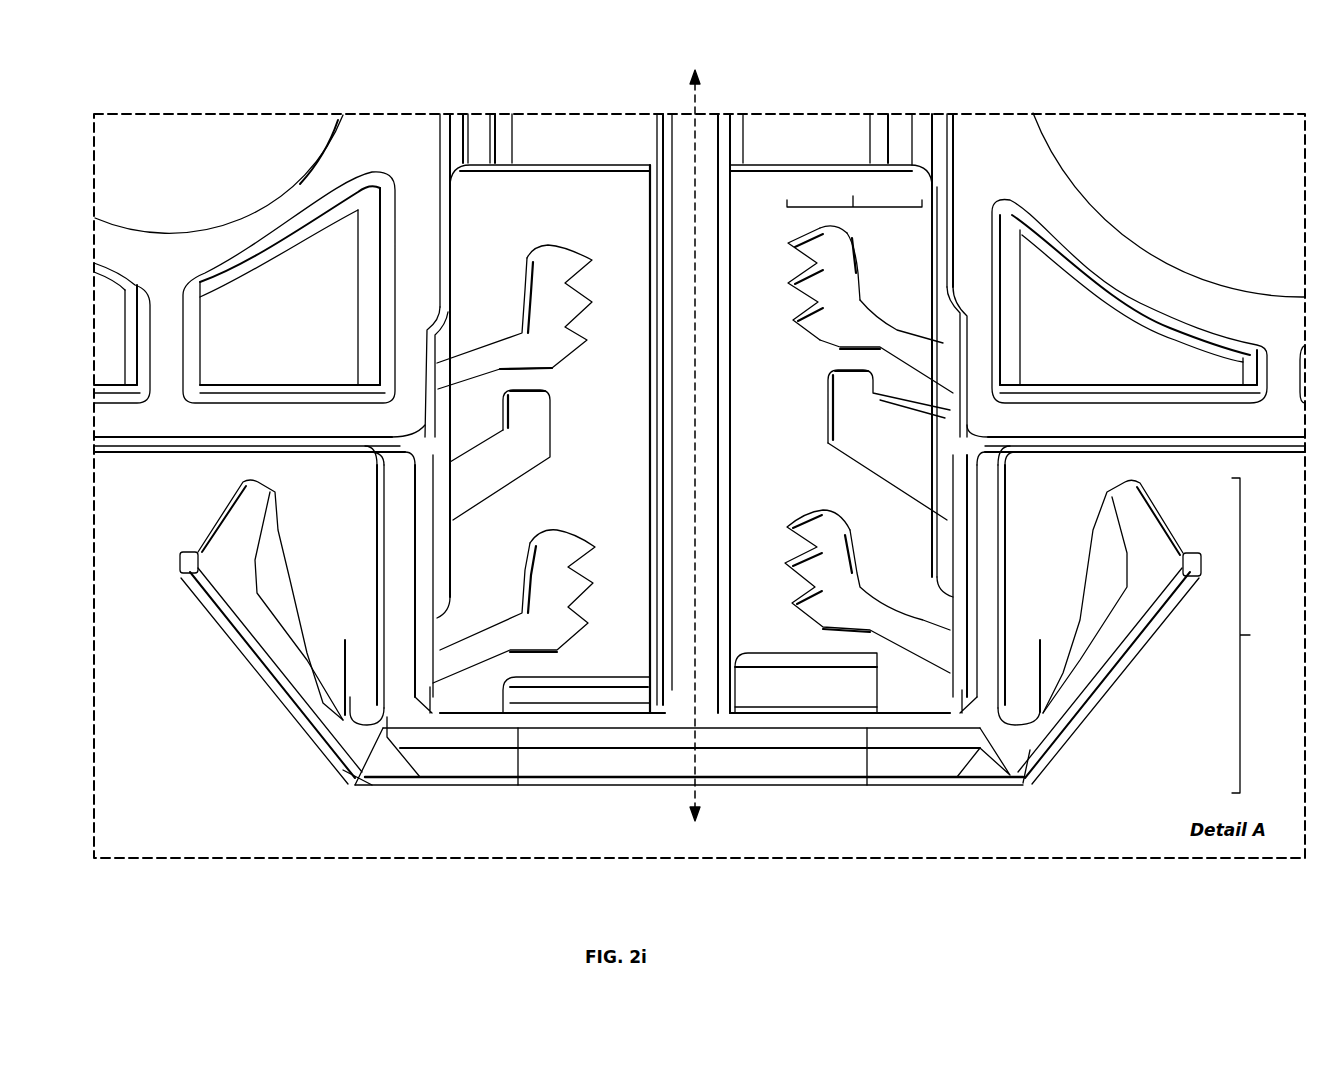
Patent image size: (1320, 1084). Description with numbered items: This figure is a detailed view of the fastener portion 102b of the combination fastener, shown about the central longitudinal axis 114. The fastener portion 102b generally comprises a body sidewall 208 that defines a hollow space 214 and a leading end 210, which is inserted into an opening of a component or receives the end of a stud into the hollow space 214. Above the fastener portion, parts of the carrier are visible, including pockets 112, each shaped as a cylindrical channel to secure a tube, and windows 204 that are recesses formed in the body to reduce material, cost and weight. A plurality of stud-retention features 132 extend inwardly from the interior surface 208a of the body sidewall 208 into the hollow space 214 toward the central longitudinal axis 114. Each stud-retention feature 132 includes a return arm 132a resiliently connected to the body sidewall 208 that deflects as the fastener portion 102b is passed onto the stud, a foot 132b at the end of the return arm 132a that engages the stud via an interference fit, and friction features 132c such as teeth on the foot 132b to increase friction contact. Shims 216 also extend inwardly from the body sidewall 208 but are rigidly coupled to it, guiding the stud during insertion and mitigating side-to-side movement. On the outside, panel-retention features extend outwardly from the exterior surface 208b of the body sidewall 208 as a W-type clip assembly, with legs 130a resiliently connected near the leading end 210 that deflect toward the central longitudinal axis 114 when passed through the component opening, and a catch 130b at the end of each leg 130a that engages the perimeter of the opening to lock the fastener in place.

The pocket 112 is at (199, 160).
The central longitudinal axis 114 is at (694, 112).
The hollow space 214 is at (526, 222).
The window 204 is at (278, 352).
The body sidewall 208 is at (699, 419).
The interior surface 208a is at (446, 552).
The exterior surface 208b is at (380, 553).
The stud-retention feature 132 is at (693, 427).
The return arm 132a is at (904, 336).
The foot 132b is at (855, 272).
The friction feature 132c is at (800, 297).
The shim 216 is at (550, 436).
The leg 130a is at (238, 652).
The catch 130b is at (178, 556).
The leading end 210 is at (396, 814).
The fastener portion 102b is at (1266, 635).